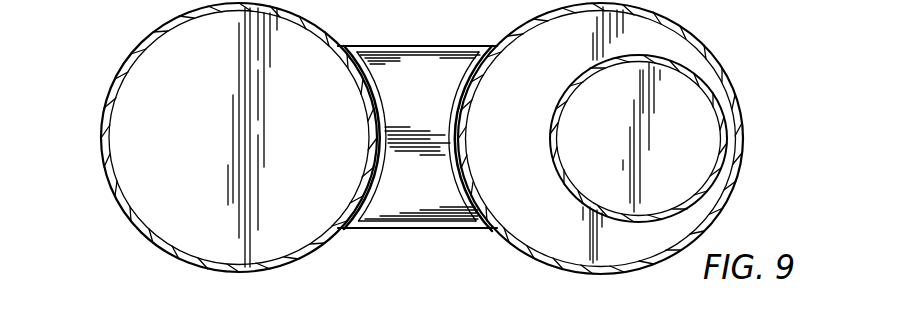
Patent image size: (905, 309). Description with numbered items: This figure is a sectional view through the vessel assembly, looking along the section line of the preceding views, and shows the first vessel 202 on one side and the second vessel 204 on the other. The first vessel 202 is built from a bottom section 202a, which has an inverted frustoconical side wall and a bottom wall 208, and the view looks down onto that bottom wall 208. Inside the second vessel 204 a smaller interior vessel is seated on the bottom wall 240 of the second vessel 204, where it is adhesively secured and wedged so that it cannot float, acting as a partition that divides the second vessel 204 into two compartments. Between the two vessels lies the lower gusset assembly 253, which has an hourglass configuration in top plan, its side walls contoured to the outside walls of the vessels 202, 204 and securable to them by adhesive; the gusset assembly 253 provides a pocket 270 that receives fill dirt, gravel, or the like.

The first vessel 202 is at (122, 225).
The bottom section 202a is at (223, 132).
The second vessel 204 is at (724, 50).
The bottom wall 208 is at (200, 151).
The bottom wall 240 is at (532, 151).
The lower gusset assembly 253 is at (376, 233).
The pocket 270 is at (437, 65).